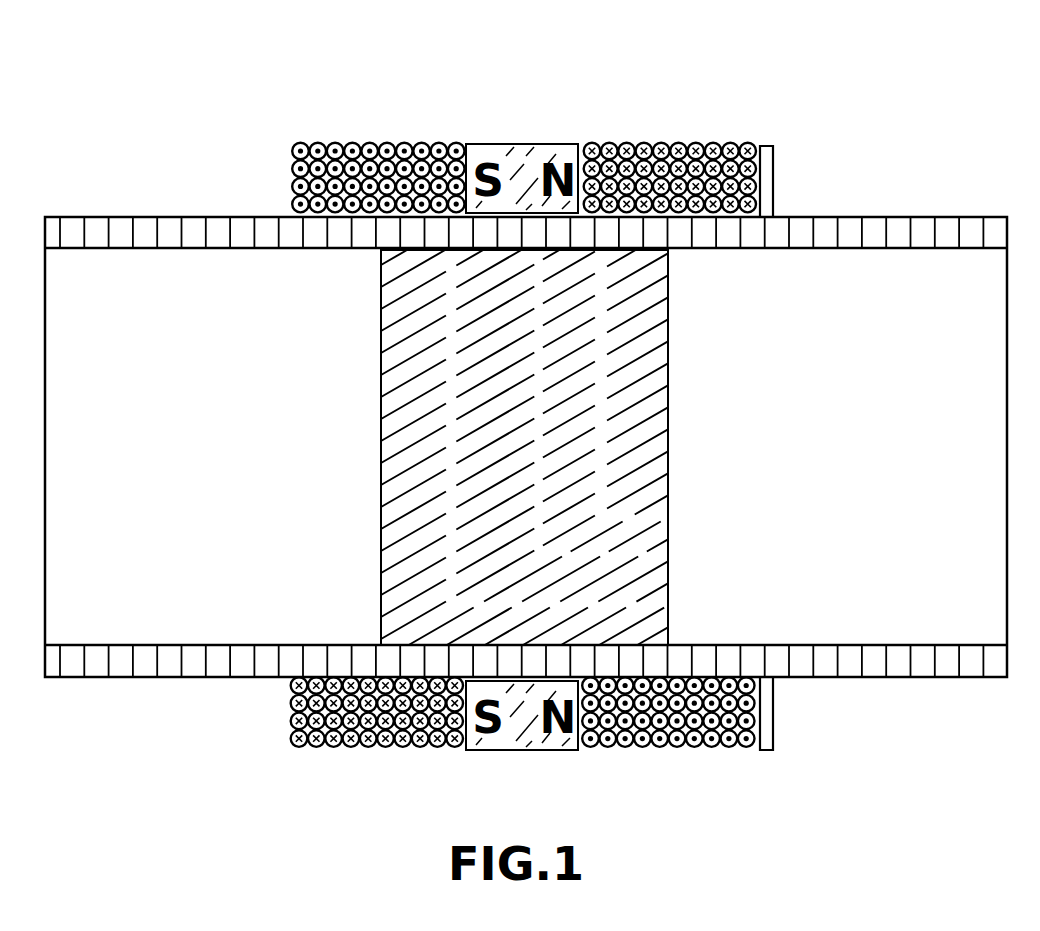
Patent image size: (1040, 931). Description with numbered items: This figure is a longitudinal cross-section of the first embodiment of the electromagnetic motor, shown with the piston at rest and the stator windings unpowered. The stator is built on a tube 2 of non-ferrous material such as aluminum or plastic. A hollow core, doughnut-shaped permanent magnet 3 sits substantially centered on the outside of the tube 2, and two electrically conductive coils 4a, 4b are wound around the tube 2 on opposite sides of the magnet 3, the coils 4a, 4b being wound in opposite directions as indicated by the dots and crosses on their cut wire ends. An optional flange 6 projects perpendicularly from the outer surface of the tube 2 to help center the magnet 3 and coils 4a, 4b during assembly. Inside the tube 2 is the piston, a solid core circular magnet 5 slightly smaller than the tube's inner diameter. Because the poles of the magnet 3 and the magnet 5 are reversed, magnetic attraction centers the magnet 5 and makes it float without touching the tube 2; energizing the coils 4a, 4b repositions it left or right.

The tube 2 is at (203, 216).
The hollow core magnet 3 is at (522, 157).
The coil 4a is at (342, 148).
The coil 4b is at (708, 153).
The solid core magnet 5 is at (470, 457).
The flange 6 is at (774, 185).